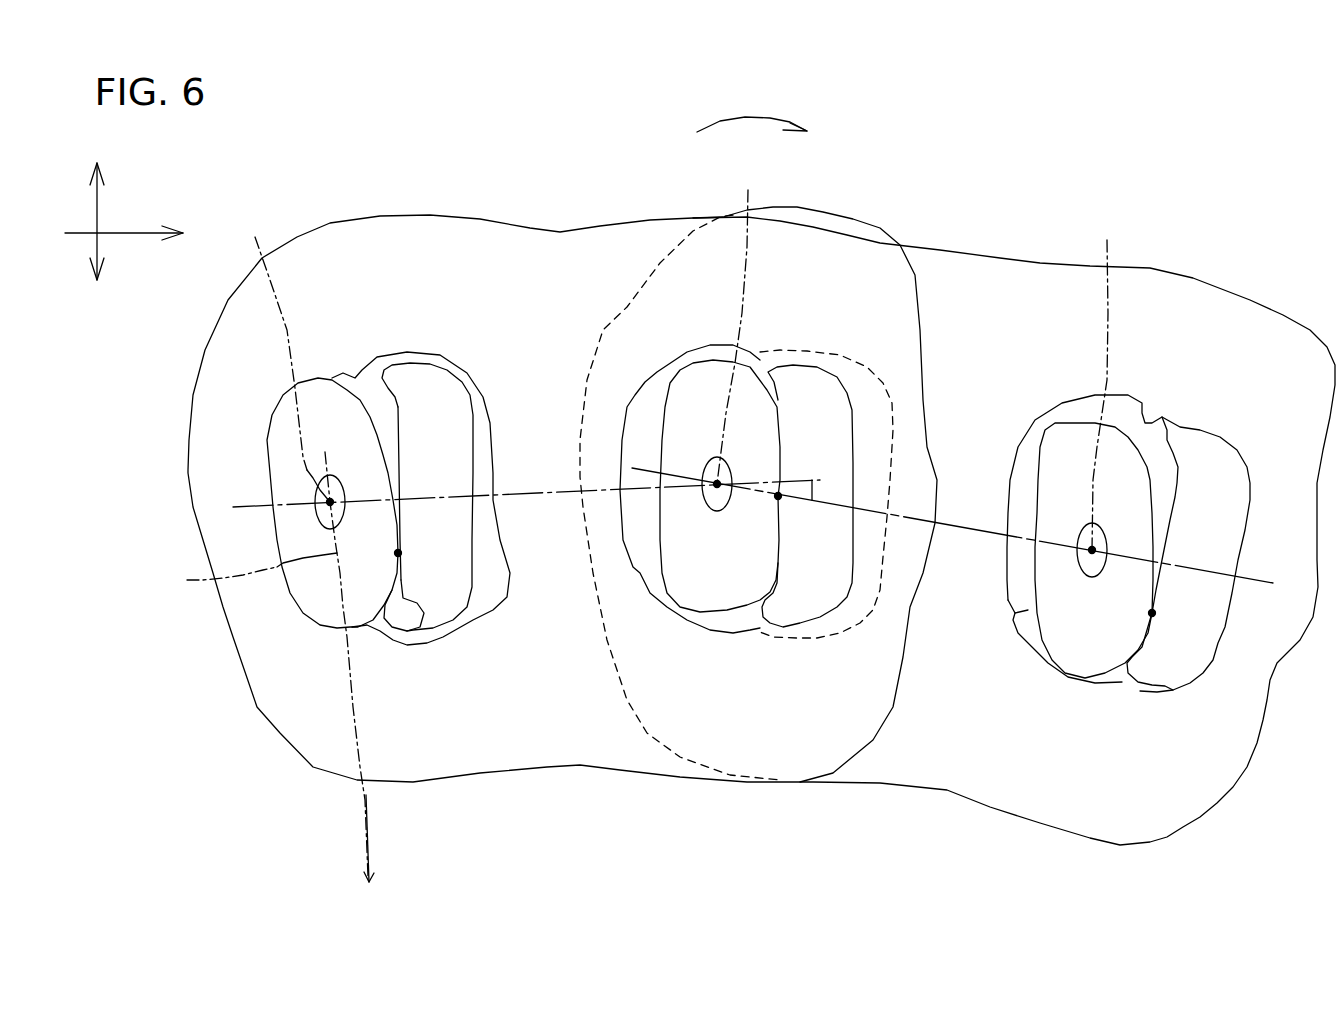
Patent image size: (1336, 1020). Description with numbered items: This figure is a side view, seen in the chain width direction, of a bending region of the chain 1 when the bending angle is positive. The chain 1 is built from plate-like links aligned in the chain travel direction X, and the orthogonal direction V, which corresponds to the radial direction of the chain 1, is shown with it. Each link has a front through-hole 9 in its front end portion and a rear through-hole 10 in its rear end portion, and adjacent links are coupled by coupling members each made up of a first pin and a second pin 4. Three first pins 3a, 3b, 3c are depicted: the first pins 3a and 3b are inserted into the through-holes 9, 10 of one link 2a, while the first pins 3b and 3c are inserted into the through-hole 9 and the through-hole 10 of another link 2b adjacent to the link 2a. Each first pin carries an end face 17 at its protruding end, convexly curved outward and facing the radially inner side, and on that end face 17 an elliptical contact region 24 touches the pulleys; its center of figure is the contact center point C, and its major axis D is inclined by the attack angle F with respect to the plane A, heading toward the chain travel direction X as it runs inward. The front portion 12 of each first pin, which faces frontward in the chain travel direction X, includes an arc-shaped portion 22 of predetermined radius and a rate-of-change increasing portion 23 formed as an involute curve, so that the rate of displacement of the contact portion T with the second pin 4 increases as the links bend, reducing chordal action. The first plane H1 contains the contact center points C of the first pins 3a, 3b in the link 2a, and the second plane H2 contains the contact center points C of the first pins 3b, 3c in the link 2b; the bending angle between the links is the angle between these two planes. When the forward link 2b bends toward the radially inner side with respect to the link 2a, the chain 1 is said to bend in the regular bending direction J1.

The chain 1 is at (762, 503).
The one link 2a is at (743, 463).
The another link 2b is at (788, 472).
The first pin 3a is at (290, 525).
The first pin 3b is at (695, 591).
The first pin 3c is at (1061, 640).
The second pin 4 is at (791, 616).
The front through-hole 9 is at (906, 302).
The rear through-hole 10 is at (567, 265).
The front portion 12 is at (413, 300).
The end face 17 is at (665, 732).
The arc-shaped portion 22 is at (404, 704).
The rate-of-change increasing portion 23 is at (780, 426).
The contact region 24 is at (621, 361).
The plane A is at (328, 664).
The contact center point C is at (679, 356).
The major axis D is at (251, 574).
The attack angle F is at (374, 864).
The first plane H1 is at (526, 462).
The second plane H2 is at (952, 519).
The regular bending direction J1 is at (752, 92).
The contact portion T is at (865, 666).
The orthogonal direction V is at (125, 221).
The chain travel direction X is at (124, 265).